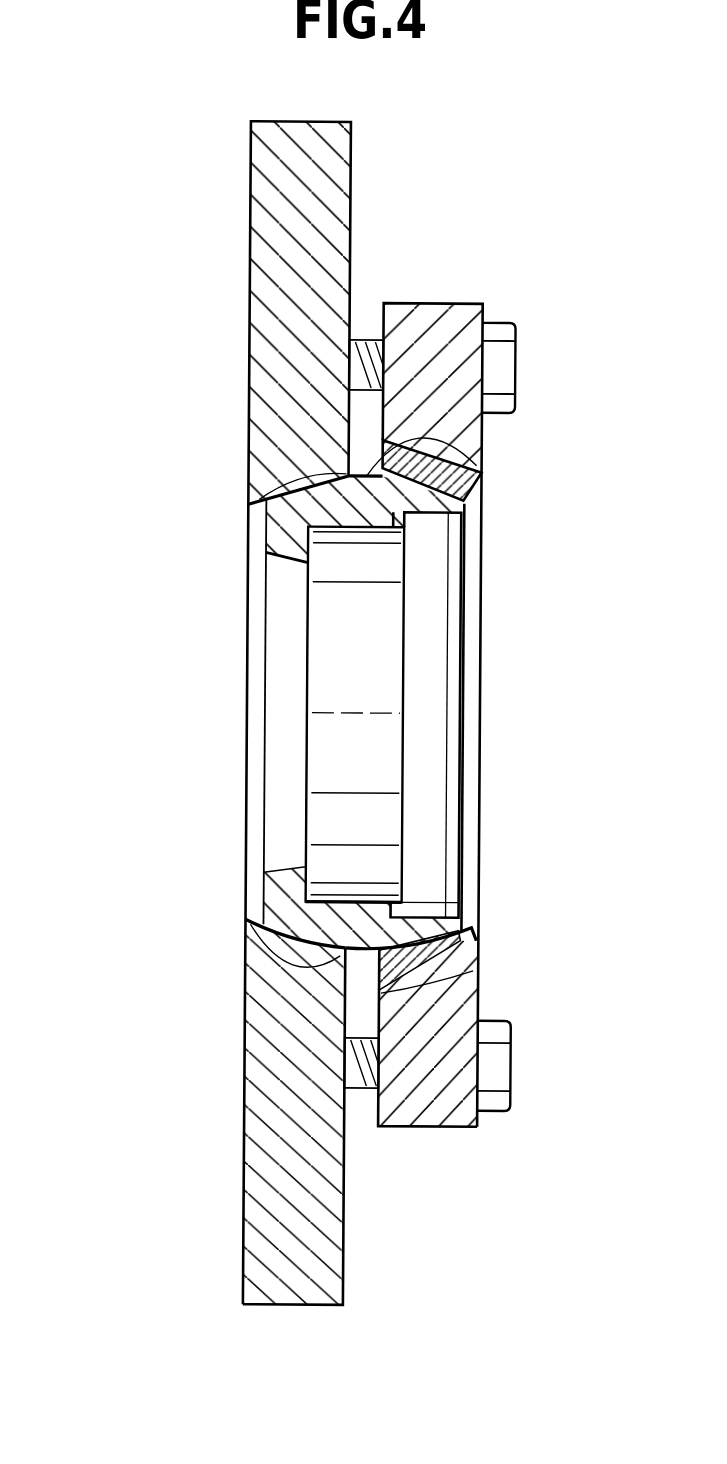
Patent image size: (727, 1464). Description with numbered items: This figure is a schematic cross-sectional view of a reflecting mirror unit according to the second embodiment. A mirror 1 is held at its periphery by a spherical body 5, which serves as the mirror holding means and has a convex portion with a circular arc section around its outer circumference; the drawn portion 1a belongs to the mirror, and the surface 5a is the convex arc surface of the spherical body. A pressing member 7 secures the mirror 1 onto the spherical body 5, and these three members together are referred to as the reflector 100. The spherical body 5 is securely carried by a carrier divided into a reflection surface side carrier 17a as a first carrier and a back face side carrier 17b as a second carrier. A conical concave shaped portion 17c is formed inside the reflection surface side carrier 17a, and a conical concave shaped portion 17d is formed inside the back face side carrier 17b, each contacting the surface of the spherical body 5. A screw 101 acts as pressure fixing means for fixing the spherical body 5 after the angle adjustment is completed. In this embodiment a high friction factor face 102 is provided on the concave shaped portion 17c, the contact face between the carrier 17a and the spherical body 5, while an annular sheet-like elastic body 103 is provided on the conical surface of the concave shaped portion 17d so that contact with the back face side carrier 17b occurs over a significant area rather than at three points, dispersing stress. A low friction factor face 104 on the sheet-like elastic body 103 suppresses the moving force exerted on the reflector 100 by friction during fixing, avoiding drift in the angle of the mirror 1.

The reflection surface side carrier 17a is at (284, 242).
The back face side carrier 17b is at (429, 312).
The conical concave shaped portion 17c is at (325, 465).
The conical concave shaped portion 17d is at (442, 457).
The spherical body 5 is at (290, 517).
The spherical surface 5a is at (420, 428).
The mirror 1 is at (330, 709).
The shaft portion 1a is at (306, 621).
The reflector 100 is at (282, 753).
The pressing member 7 is at (425, 716).
The screw 101 is at (513, 366).
The high friction factor face 102 is at (337, 956).
The sheet-like elastic body 103 is at (475, 937).
The low friction factor face 104 is at (455, 990).